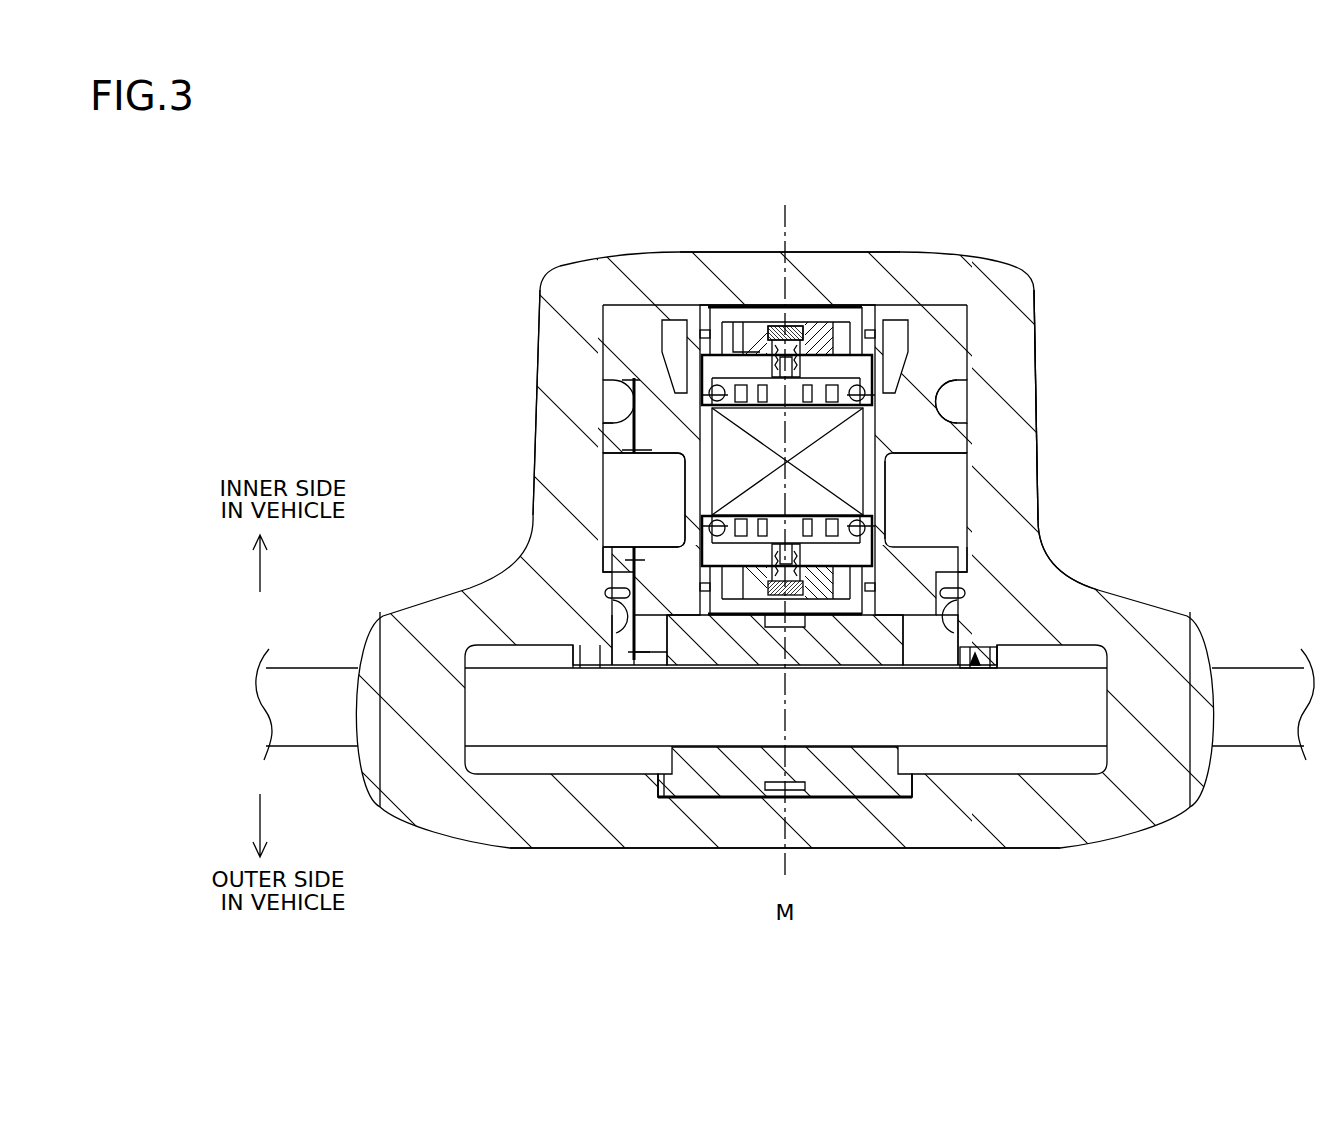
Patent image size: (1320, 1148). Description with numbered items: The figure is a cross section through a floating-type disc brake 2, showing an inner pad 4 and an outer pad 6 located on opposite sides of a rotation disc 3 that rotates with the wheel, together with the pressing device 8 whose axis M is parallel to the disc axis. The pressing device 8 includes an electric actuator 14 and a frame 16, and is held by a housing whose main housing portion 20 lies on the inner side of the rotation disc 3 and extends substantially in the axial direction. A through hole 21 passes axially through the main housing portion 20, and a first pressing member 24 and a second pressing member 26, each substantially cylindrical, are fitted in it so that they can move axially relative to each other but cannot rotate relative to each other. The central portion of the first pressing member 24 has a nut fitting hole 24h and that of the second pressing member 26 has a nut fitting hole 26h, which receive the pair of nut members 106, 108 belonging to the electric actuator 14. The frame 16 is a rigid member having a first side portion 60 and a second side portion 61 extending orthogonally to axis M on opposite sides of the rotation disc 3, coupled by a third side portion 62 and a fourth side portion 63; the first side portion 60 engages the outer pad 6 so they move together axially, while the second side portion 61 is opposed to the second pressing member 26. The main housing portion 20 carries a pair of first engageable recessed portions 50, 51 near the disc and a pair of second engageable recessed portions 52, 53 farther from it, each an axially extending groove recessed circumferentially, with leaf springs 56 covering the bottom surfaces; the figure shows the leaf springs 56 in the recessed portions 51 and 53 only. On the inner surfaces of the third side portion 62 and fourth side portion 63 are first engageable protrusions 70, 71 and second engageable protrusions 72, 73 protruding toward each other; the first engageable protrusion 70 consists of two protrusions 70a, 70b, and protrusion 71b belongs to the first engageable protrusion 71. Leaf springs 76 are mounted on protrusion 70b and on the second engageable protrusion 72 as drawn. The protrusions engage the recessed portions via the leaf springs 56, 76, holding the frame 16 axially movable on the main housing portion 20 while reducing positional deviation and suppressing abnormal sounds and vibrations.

The disc brake 2 is at (1054, 250).
The rotation disc 3 is at (300, 682).
The inner pad 4 is at (955, 614).
The outer pad 6 is at (882, 777).
The pressing device 8 is at (516, 308).
The electric actuator 14 is at (910, 487).
The frame 16 is at (1045, 400).
The main housing portion 20 is at (932, 260).
The through hole 21 is at (897, 338).
The first pressing member 24 is at (823, 612).
The nut fitting hole 24h is at (673, 550).
The second pressing member 26 is at (799, 290).
The nut fitting hole 26h is at (725, 334).
The first engageable recessed portion 50 is at (888, 540).
The first engageable recessed portion 51 is at (605, 560).
The second engageable recessed portion 52 is at (950, 442).
The second engageable recessed portion 53 is at (620, 443).
The leaf spring 56 is at (636, 390).
The first side portion 60 is at (748, 827).
The second side portion 61 is at (801, 260).
The third side portion 62 is at (1023, 373).
The fourth side portion 63 is at (548, 373).
The first engageable protrusion 70 is at (973, 670).
The protrusion 70a is at (603, 593).
The protrusion 70b is at (947, 630).
The first engageable protrusion 71 is at (613, 645).
The protrusion 71b is at (632, 652).
The second engageable protrusion 72 is at (955, 385).
The second engageable protrusion 73 is at (603, 355).
The leaf spring 76 is at (620, 396).
The nut member 106 is at (740, 603).
The nut member 108 is at (813, 350).